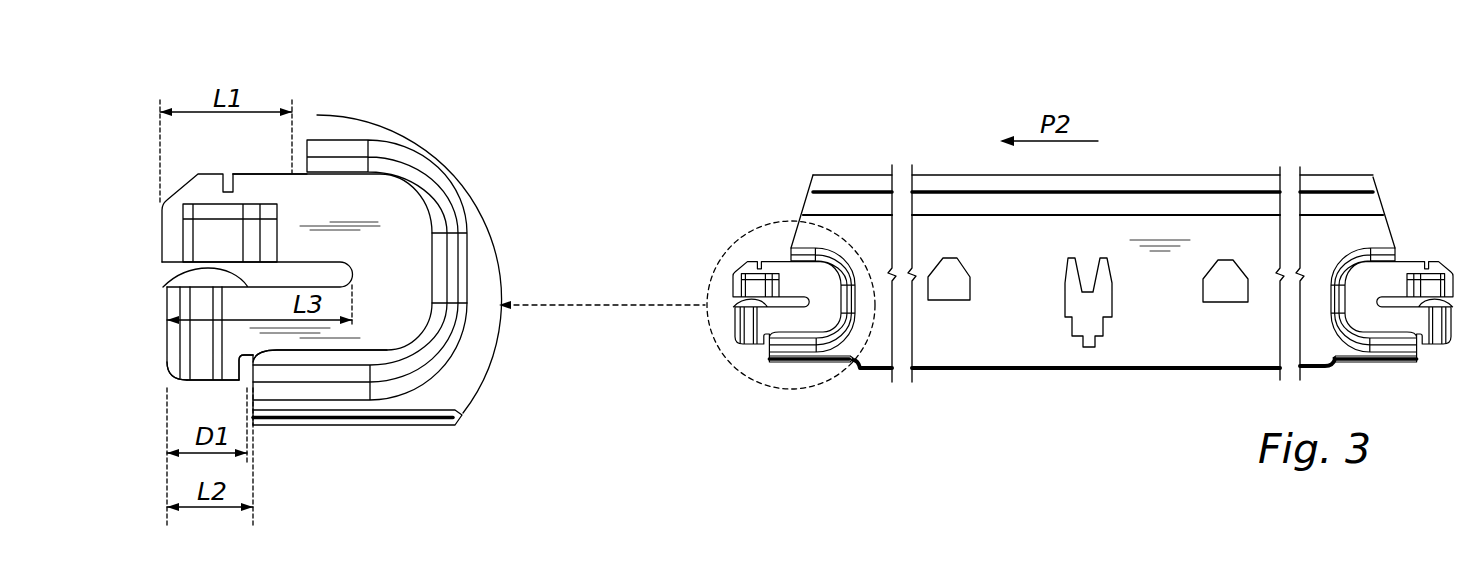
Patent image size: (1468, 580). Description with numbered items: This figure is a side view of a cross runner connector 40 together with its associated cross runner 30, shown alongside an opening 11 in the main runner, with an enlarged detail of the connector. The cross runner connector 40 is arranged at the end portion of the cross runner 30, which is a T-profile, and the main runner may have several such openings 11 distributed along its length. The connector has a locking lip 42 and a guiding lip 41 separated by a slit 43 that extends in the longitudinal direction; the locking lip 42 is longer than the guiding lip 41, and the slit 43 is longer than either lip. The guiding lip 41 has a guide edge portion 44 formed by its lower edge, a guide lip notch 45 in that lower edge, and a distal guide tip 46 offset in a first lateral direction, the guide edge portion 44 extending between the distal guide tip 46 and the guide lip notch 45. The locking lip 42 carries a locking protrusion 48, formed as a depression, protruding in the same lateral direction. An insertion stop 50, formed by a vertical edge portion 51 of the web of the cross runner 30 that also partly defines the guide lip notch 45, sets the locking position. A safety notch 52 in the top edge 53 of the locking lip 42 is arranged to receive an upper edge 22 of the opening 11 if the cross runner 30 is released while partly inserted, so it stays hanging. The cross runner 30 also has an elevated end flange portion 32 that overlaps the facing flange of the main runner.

The cross runner connector 40 is at (144, 169).
The locking lip 42 is at (205, 190).
The locking protrusion 48 is at (220, 236).
The slit 43 is at (200, 270).
The guiding lip 41 is at (214, 340).
The distal guide tip 46 is at (167, 356).
The guide edge portion 44 is at (196, 385).
The guide lip notch 45 is at (241, 396).
The insertion stop 50 is at (257, 352).
The vertical edge portion 51 is at (258, 398).
The safety notch 52 is at (233, 188).
The top edge 53 is at (267, 173).
The cross runner 30 is at (1145, 220).
The elevated end flange portion 32 is at (808, 378).
The upper edge 22 is at (1067, 276).
The opening 11 is at (1113, 303).